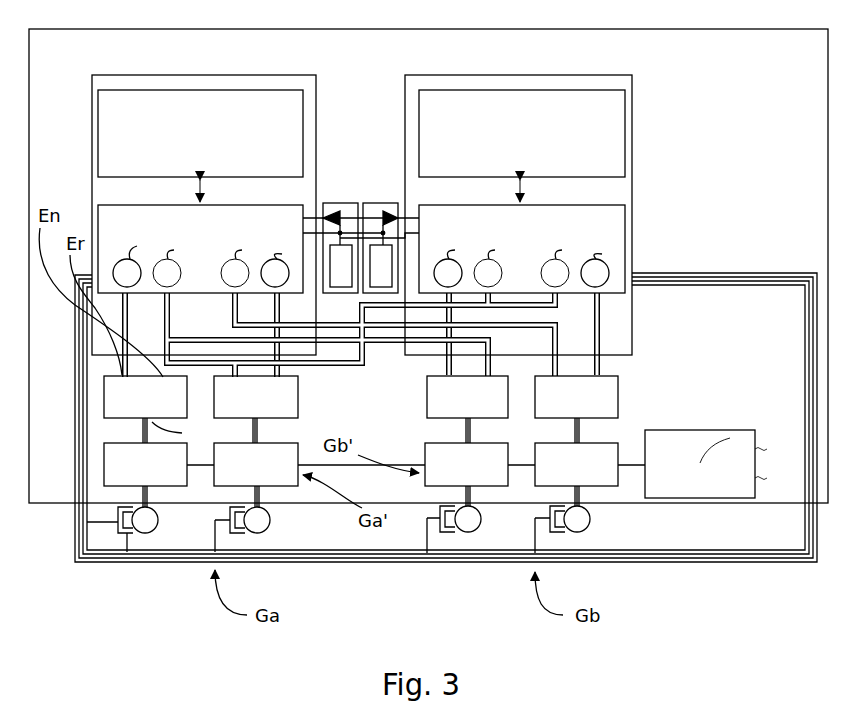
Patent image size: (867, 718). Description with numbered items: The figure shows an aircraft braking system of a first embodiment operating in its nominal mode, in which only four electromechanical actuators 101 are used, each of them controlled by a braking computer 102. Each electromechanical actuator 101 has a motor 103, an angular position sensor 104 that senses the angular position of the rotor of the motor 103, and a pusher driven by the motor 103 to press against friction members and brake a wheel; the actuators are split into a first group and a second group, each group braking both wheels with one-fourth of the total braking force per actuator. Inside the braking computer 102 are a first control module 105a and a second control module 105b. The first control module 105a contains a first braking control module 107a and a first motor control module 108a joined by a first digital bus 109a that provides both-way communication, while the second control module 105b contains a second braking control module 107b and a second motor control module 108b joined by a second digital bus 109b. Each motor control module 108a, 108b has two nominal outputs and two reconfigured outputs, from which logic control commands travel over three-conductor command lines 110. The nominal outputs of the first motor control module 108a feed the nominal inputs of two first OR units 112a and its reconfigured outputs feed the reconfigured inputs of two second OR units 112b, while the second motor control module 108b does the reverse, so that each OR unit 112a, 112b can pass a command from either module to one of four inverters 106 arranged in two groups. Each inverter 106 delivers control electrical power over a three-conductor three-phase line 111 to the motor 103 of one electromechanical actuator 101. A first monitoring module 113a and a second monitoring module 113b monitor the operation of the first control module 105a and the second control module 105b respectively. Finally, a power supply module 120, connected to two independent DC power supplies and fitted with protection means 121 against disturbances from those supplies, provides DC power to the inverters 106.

The electromechanical actuator 101 is at (142, 538).
The braking computer 102 is at (828, 90).
The motor 103 is at (160, 521).
The angular position sensor 104 is at (127, 563).
The first control module 105a is at (318, 85).
The second control module 105b is at (634, 85).
The inverter 106 is at (104, 467).
The first braking control module 107a is at (222, 92).
The second braking control module 107b is at (540, 92).
The first motor control module 108a is at (300, 208).
The second motor control module 108b is at (628, 222).
The first digital bus 109a is at (205, 190).
The second digital bus 109b is at (522, 190).
The command line 110 is at (170, 315).
The three-phase line 111 is at (140, 493).
The first OR unit 112a is at (104, 395).
The second OR unit 112b is at (427, 388).
The first monitoring module 113a is at (328, 203).
The second monitoring module 113b is at (390, 193).
The power supply module 120 is at (682, 430).
The protection means 121 is at (700, 463).